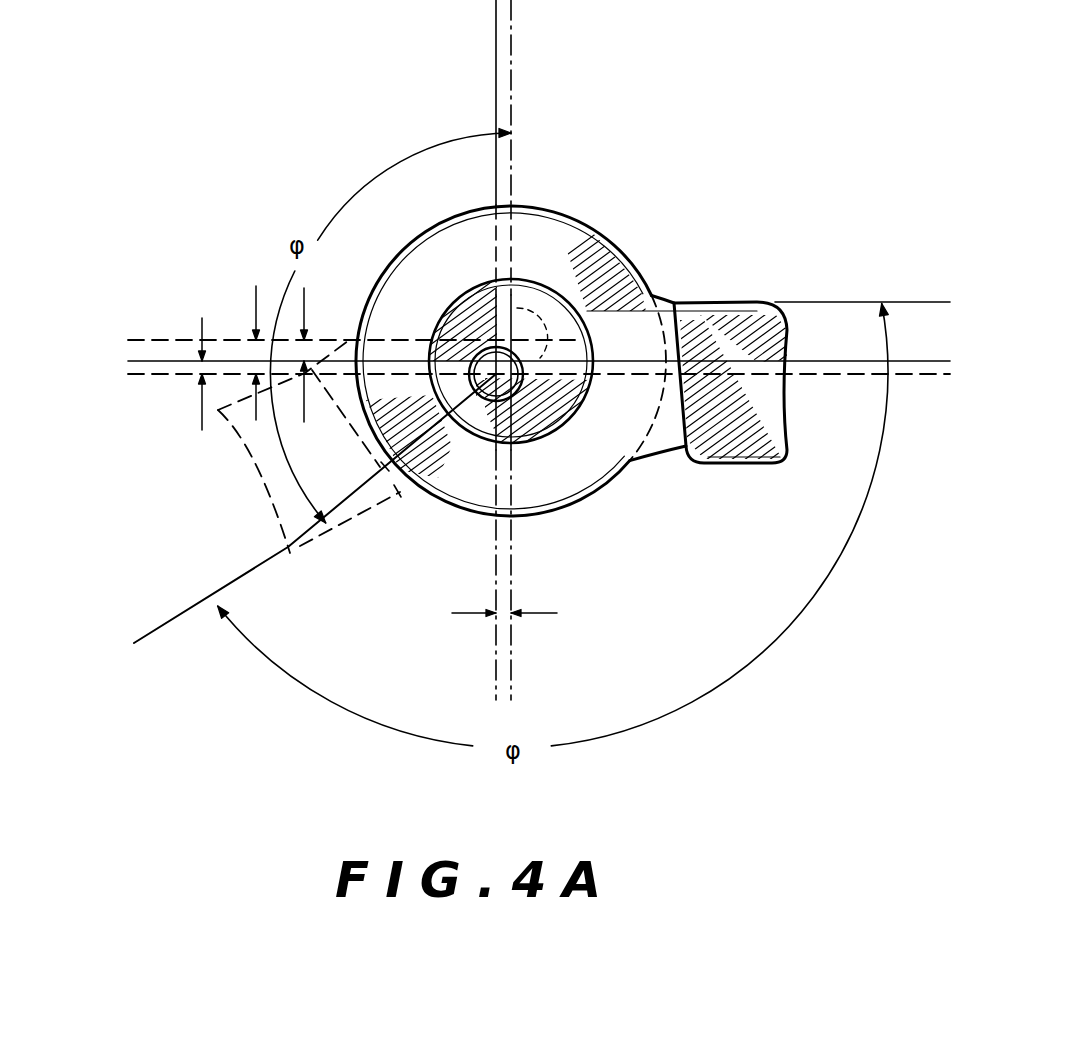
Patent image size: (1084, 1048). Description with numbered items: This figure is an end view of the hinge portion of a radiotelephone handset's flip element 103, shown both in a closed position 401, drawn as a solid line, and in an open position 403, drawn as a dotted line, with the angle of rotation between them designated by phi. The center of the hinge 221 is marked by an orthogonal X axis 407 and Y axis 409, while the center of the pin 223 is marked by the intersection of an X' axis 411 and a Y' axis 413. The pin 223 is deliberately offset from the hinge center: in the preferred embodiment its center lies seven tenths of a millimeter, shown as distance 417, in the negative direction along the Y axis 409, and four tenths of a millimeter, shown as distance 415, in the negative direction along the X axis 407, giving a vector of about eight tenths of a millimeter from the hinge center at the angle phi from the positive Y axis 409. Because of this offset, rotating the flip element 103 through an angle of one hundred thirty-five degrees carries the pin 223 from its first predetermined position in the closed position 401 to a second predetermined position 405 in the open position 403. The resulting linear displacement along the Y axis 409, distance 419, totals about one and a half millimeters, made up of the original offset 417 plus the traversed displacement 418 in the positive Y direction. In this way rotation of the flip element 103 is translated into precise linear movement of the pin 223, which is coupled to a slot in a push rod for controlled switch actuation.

The flip element 103 is at (698, 300).
The hinge 221 is at (453, 217).
The pin 223 is at (475, 352).
The closed position 401 is at (733, 302).
The open position 403 is at (297, 553).
The second predetermined position 405 is at (515, 310).
The X axis 407 is at (952, 363).
The Y axis 409 is at (510, 93).
The X' axis 411 is at (857, 377).
The Y' axis 413 is at (493, 100).
The distance 415 is at (529, 611).
The distance 417 is at (200, 358).
The traversed displacement 418 is at (327, 354).
The distance 419 is at (258, 338).